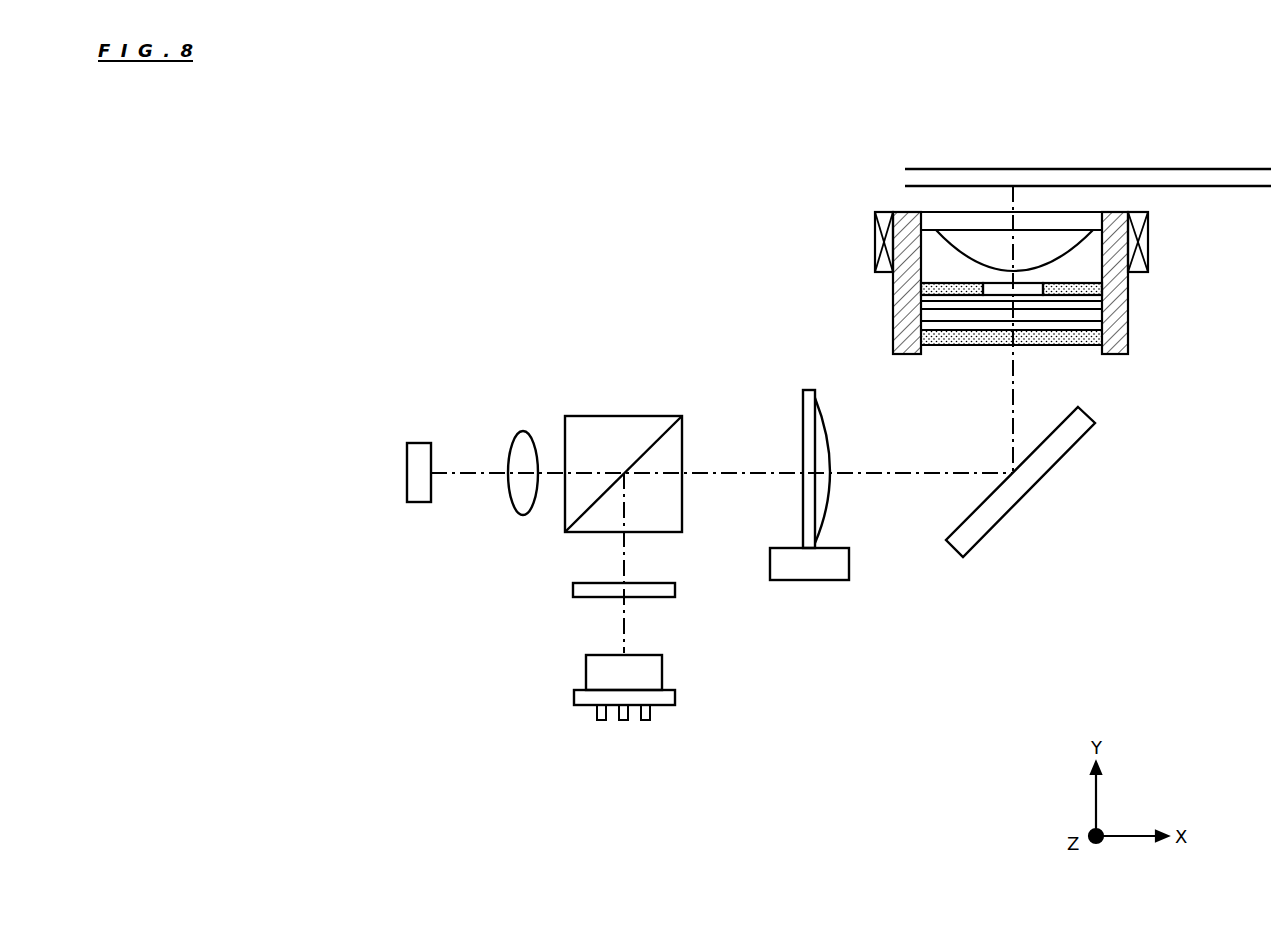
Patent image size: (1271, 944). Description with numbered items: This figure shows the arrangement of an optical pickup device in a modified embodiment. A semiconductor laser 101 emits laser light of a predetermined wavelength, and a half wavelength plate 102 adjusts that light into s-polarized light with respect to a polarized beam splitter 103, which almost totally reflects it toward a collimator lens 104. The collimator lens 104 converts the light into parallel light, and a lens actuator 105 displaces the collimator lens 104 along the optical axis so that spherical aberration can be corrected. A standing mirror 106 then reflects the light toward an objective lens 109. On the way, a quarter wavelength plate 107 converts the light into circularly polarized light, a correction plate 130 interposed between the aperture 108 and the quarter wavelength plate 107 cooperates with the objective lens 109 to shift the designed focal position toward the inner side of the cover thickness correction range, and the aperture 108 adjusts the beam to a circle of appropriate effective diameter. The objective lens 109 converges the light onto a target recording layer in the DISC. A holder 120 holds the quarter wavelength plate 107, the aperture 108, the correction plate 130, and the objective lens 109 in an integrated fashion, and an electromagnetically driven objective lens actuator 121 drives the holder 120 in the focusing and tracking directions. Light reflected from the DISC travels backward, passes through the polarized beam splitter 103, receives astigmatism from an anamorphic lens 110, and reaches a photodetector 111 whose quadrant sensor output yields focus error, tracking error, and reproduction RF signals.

The semiconductor laser 101 is at (655, 718).
The half wavelength plate 102 is at (683, 587).
The polarized beam splitter 103 is at (603, 407).
The collimator lens 104 is at (810, 382).
The lens actuator 105 is at (830, 572).
The standing mirror 106 is at (1032, 500).
The quarter wavelength plate 107 is at (1087, 337).
The aperture 108 is at (989, 291).
The objective lens 109 is at (1062, 212).
The anamorphic lens 110 is at (523, 513).
The photodetector 111 is at (407, 512).
The holder 120 is at (903, 212).
The objective lens actuator 121 is at (1142, 280).
The correction plate 130 is at (1002, 312).
The disc DISC is at (1175, 175).